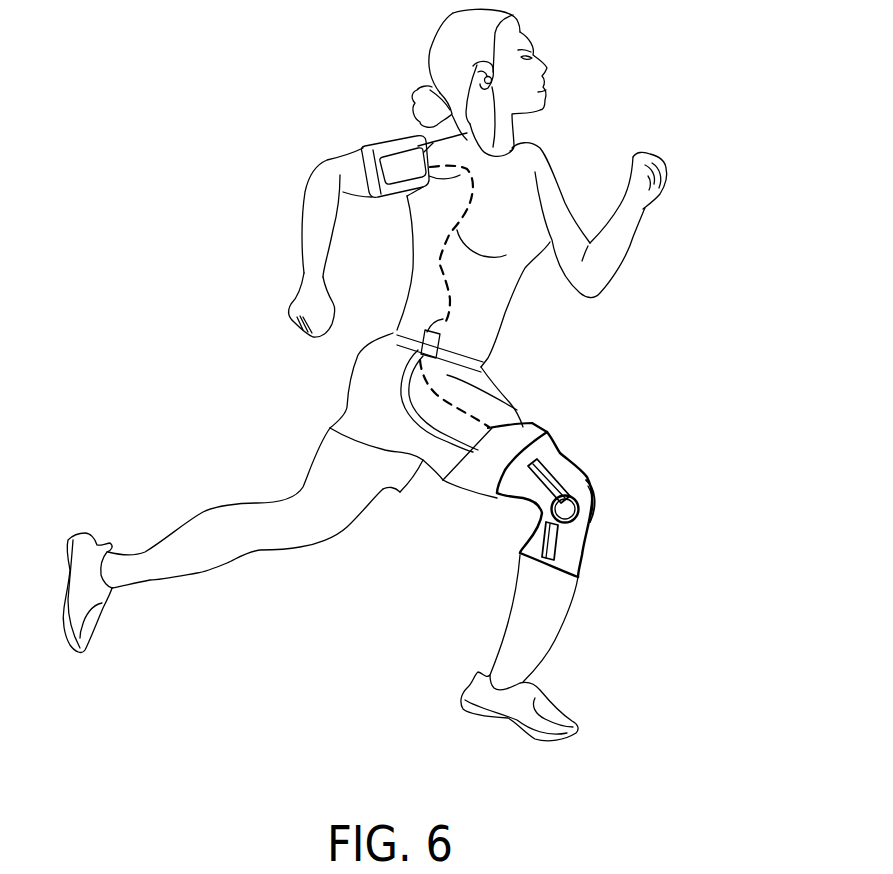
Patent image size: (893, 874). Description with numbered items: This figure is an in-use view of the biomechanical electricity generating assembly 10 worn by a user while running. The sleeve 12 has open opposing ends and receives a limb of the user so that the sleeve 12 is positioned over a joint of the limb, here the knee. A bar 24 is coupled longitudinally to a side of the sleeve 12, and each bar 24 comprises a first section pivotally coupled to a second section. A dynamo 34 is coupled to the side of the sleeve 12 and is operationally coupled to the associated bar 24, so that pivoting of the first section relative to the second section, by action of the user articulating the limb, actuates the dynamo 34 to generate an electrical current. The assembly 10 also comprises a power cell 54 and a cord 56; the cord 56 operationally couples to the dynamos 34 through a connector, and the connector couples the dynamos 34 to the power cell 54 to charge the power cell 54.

The biomechanical electricity generating assembly 10 is at (208, 82).
The sleeve 12 is at (570, 460).
The bar 24 is at (542, 508).
The dynamo 34 is at (580, 514).
The power cell 54 is at (431, 343).
The cord 56 is at (533, 422).